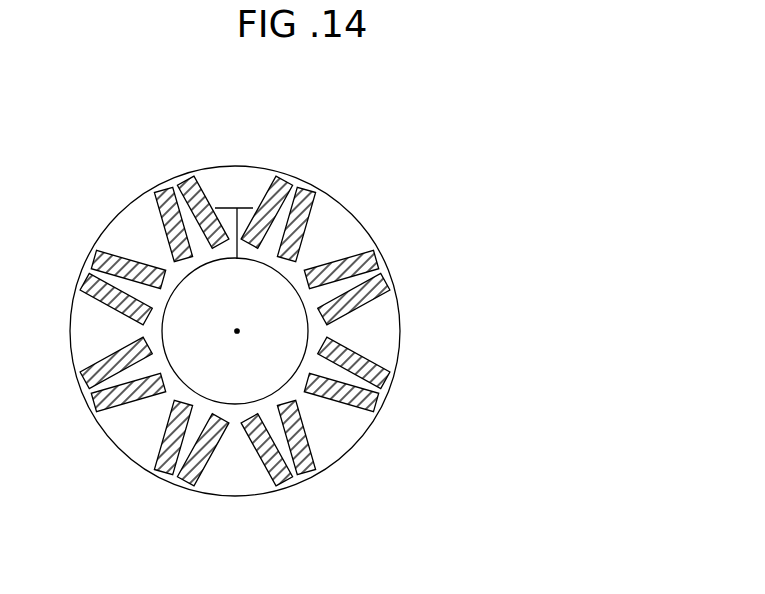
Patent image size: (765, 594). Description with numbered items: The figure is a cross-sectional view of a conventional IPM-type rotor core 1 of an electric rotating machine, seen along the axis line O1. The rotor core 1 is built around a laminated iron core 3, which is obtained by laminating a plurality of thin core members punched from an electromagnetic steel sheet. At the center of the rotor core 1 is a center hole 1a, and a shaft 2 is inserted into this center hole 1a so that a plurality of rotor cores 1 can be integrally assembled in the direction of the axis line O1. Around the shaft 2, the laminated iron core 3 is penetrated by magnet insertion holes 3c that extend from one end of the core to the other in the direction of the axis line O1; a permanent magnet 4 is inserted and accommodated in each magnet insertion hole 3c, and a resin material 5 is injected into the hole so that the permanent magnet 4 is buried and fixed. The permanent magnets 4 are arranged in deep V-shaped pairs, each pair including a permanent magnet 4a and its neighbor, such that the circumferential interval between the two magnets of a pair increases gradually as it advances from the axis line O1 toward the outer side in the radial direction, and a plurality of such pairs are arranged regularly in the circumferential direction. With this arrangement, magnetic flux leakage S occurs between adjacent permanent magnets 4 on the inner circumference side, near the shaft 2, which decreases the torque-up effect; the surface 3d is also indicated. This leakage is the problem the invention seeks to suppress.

The rotor core 1 is at (376, 223).
The center hole 1a is at (310, 384).
The shaft 2 is at (238, 385).
The laminated iron core 3 is at (122, 210).
The magnet insertion hole 3c is at (259, 282).
The inner peripheral surface of stator core 3d is at (290, 383).
The permanent magnet 4 is at (259, 282).
The permanent magnet 4a is at (259, 282).
The resin material 5 is at (198, 178).
The magnetic flux leakage S is at (232, 208).
The axis line O1 is at (240, 331).